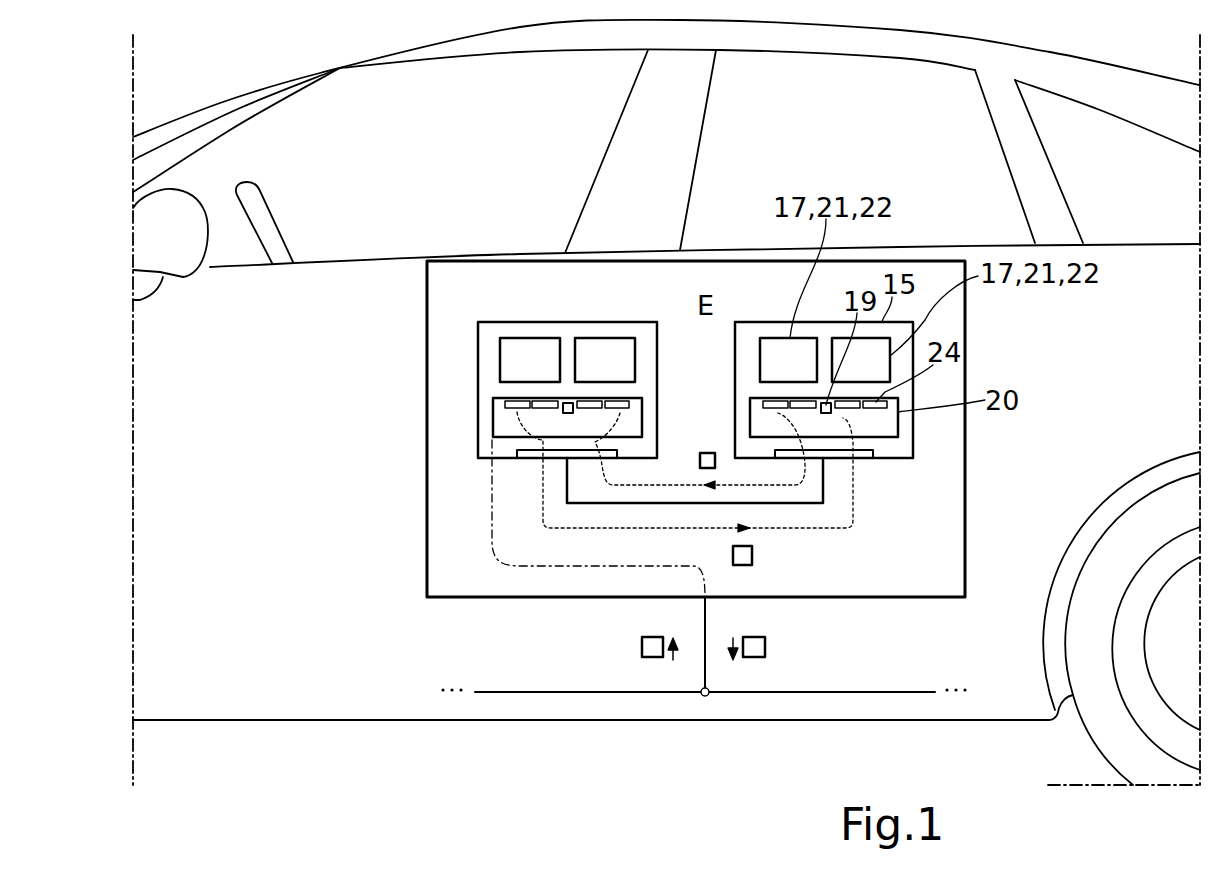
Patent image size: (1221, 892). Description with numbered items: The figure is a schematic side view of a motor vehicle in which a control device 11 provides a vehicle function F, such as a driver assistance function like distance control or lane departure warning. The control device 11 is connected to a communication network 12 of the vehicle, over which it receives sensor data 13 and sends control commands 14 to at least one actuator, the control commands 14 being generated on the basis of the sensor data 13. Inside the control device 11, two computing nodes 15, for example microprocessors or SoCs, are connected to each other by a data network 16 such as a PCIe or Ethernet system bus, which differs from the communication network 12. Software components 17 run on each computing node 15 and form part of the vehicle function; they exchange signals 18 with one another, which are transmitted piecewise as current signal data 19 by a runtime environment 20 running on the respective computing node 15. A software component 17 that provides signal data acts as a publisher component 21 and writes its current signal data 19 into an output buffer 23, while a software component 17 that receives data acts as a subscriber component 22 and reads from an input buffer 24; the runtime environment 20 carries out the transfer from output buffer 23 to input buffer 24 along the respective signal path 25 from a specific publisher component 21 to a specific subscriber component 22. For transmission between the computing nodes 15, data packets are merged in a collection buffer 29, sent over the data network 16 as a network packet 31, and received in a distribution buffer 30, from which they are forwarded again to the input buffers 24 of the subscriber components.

The control device 11 is at (697, 261).
The communication network 12 is at (570, 693).
The sensor data 13 is at (642, 645).
The control commands 14 is at (767, 650).
The computing node 15 is at (520, 322).
The data network 16 is at (823, 480).
The software components 17 is at (580, 275).
The signals 18 is at (665, 522).
The signal data 19 is at (568, 402).
The runtime environment 20 is at (493, 415).
The publisher component 21 is at (580, 275).
The subscriber component 22 is at (631, 338).
The output buffer 23 is at (527, 400).
The input buffer 24 is at (530, 400).
The signal path 25 is at (575, 418).
The collection buffer 29 is at (517, 453).
The distribution buffer 30 is at (617, 453).
The network packet 31 is at (703, 453).